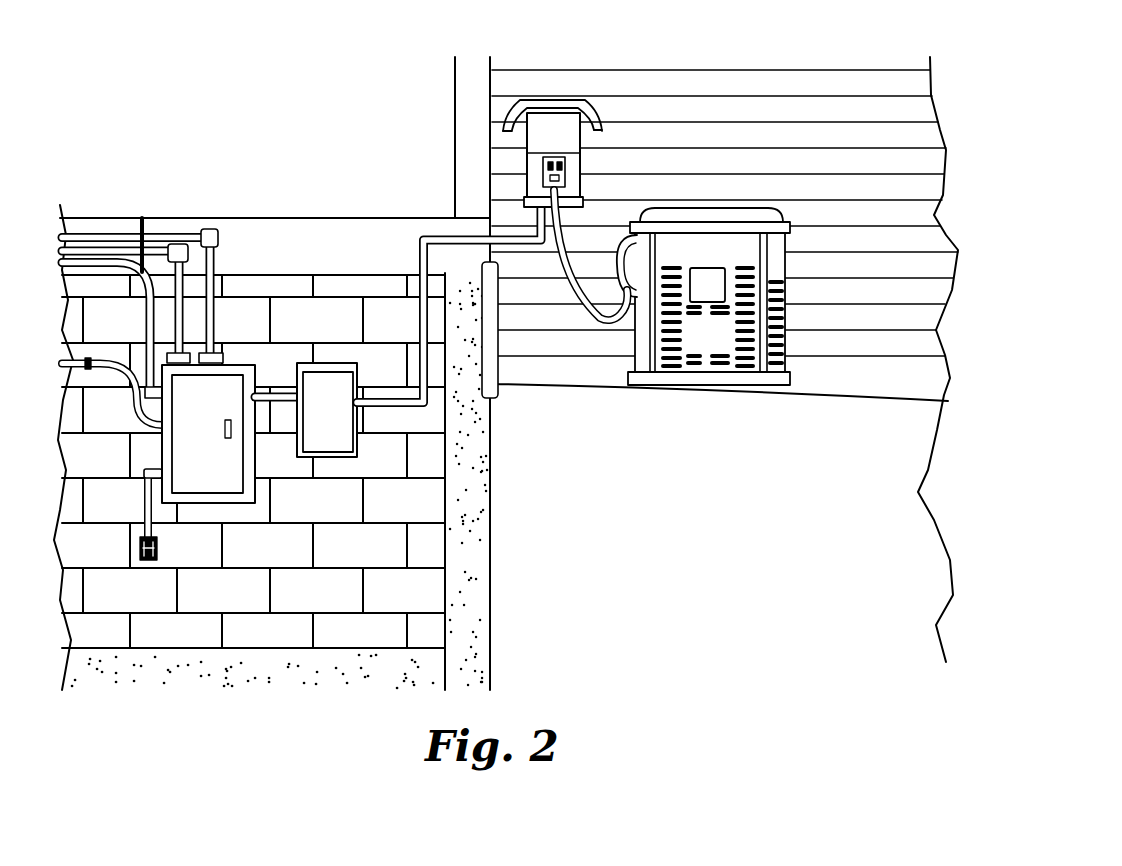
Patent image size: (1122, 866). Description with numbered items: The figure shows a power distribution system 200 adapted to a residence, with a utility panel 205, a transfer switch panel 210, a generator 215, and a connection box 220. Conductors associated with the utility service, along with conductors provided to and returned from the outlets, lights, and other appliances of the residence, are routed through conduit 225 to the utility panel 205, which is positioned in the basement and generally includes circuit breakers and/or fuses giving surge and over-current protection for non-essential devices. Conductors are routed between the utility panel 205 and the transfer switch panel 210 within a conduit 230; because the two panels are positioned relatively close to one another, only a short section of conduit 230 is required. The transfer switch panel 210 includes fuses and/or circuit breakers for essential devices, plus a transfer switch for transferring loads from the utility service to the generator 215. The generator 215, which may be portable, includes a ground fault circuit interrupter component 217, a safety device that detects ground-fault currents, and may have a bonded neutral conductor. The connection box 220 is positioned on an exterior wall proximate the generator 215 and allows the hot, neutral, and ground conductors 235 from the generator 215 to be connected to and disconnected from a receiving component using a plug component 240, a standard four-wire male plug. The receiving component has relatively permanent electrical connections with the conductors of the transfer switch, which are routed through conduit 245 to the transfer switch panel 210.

The power distribution system 200 is at (606, 527).
The utility panel 205 is at (216, 477).
The transfer switch panel 210 is at (339, 423).
The generator 215 is at (735, 404).
The ground fault circuit interrupter component 217 is at (633, 264).
The connection box 220 is at (578, 87).
The conduit 225 is at (190, 219).
The conduit 230 is at (276, 410).
The conductors 235 is at (603, 325).
The plug component 240 is at (543, 167).
The conduit 245 is at (433, 236).